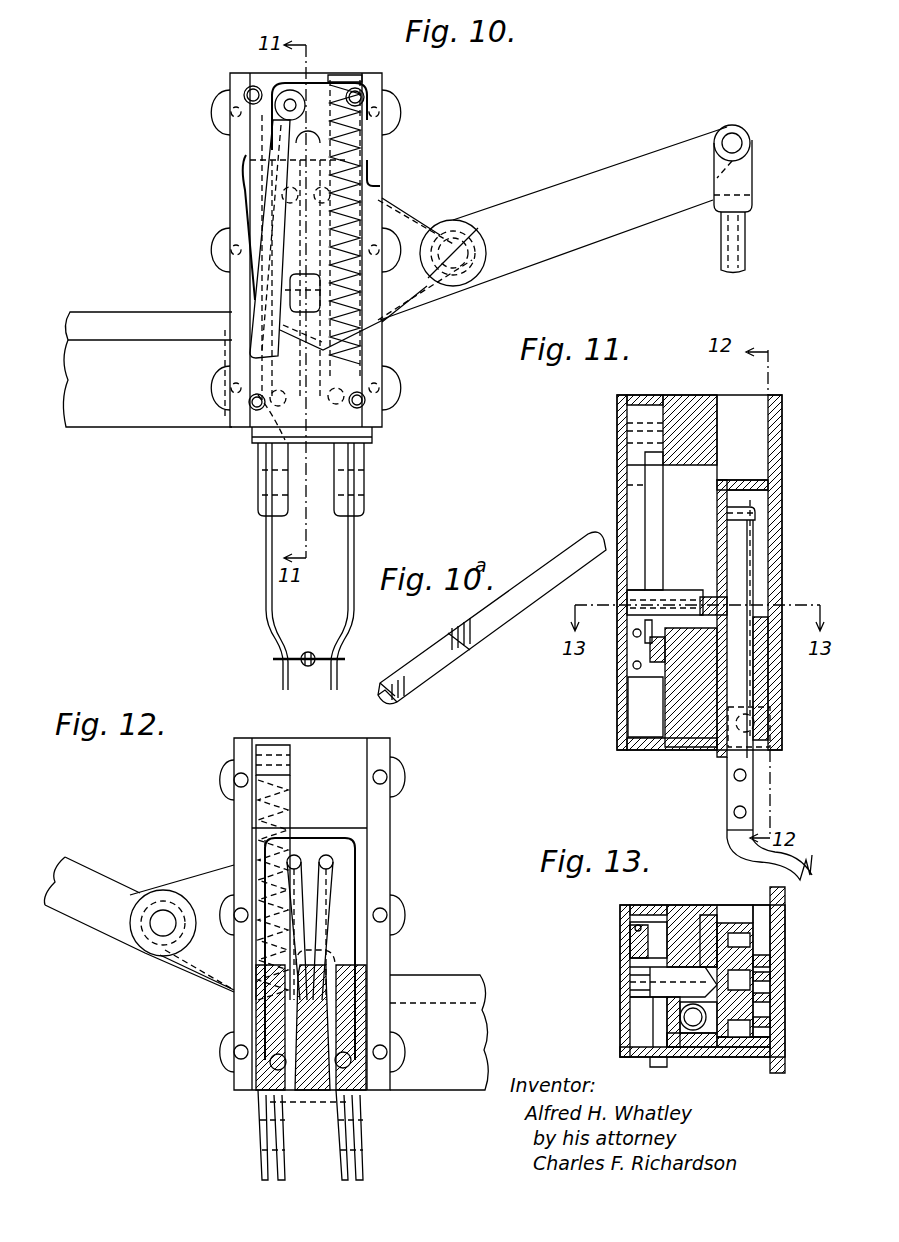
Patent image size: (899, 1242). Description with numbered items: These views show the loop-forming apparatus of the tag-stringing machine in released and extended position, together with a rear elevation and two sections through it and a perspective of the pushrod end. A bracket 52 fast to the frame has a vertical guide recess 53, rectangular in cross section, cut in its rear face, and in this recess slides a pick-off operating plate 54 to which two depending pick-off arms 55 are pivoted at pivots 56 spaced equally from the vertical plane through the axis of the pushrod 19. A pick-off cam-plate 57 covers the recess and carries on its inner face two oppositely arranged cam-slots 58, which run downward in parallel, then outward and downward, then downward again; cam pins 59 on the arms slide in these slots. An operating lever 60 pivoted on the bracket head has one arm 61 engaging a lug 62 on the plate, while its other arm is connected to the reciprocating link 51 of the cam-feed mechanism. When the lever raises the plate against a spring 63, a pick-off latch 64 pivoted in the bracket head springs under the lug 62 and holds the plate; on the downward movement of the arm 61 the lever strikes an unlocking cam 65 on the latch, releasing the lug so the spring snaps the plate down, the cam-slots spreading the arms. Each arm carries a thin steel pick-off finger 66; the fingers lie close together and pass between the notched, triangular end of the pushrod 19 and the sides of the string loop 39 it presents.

In FIG. 10, the pushrod 19 is at (311, 667).
In FIG. 10A, the pushrod 19 is at (430, 668).
In FIG. 10, the string loop 39 is at (287, 665).
In FIG. 10, the reciprocating link 51 is at (742, 243).
In FIG. 10, the bracket 52 is at (147, 369).
In FIG. 12, the bracket 52 is at (439, 1032).
In FIG. 10, the vertical guide recess 53 is at (306, 258).
In FIG. 11, the vertical guide recess 53 is at (699, 576).
In FIG. 12, the vertical guide recess 53 is at (312, 914).
In FIG. 13, the vertical guide recess 53 is at (702, 980).
In FIG. 10, the pick-off operating plate 54 is at (315, 241).
In FIG. 11, the pick-off operating plate 54 is at (737, 478).
In FIG. 12, the pick-off operating plate 54 is at (360, 848).
In FIG. 13, the pick-off operating plate 54 is at (724, 1058).
In FIG. 11, the pick-off arms 55 is at (740, 575).
In FIG. 12, the pick-off arms 55 is at (333, 893).
In FIG. 13, the pick-off arms 55 is at (688, 912).
In FIG. 10, the pivots 56 is at (285, 195).
In FIG. 11, the pivots 56 is at (756, 518).
In FIG. 12, the pivots 56 is at (328, 856).
In FIG. 11, the pick-off cam-plate 57 is at (762, 686).
In FIG. 13, the pick-off cam-plate 57 is at (772, 977).
In FIG. 12, the cam-slots 58 is at (300, 1005).
In FIG. 13, the cam-slots 58 is at (772, 975).
In FIG. 10, the cam pins 59 is at (262, 437).
In FIG. 11, the cam pins 59 is at (758, 725).
In FIG. 12, the cam pins 59 is at (352, 1062).
In FIG. 13, the cam pins 59 is at (762, 958).
In FIG. 10, the operating lever 60 is at (540, 240).
In FIG. 11, the operating lever 60 is at (650, 660).
In FIG. 12, the operating lever 60 is at (70, 910).
In FIG. 10, the arm of operating lever 61 is at (385, 320).
In FIG. 12, the arm of operating lever 61 is at (215, 960).
In FIG. 13, the arm of operating lever 61 is at (655, 1030).
In FIG. 10, the lug 62 is at (248, 288).
In FIG. 11, the lug 62 is at (678, 598).
In FIG. 12, the lug 62 is at (323, 952).
In FIG. 13, the lug 62 is at (640, 982).
In FIG. 10, the spring 63 is at (378, 205).
In FIG. 12, the spring 63 is at (268, 798).
In FIG. 13, the spring 63 is at (680, 1007).
In FIG. 10, the pick-off latch 64 is at (262, 275).
In FIG. 11, the pick-off latch 64 is at (640, 540).
In FIG. 13, the pick-off latch 64 is at (632, 950).
In FIG. 10, the unlocking cam 65 is at (280, 315).
In FIG. 11, the unlocking cam 65 is at (645, 636).
In FIG. 10, the pick-off fingers 66 is at (266, 633).
In FIG. 11, the pick-off fingers 66 is at (748, 852).
In FIG. 12, the pick-off fingers 66 is at (262, 1180).